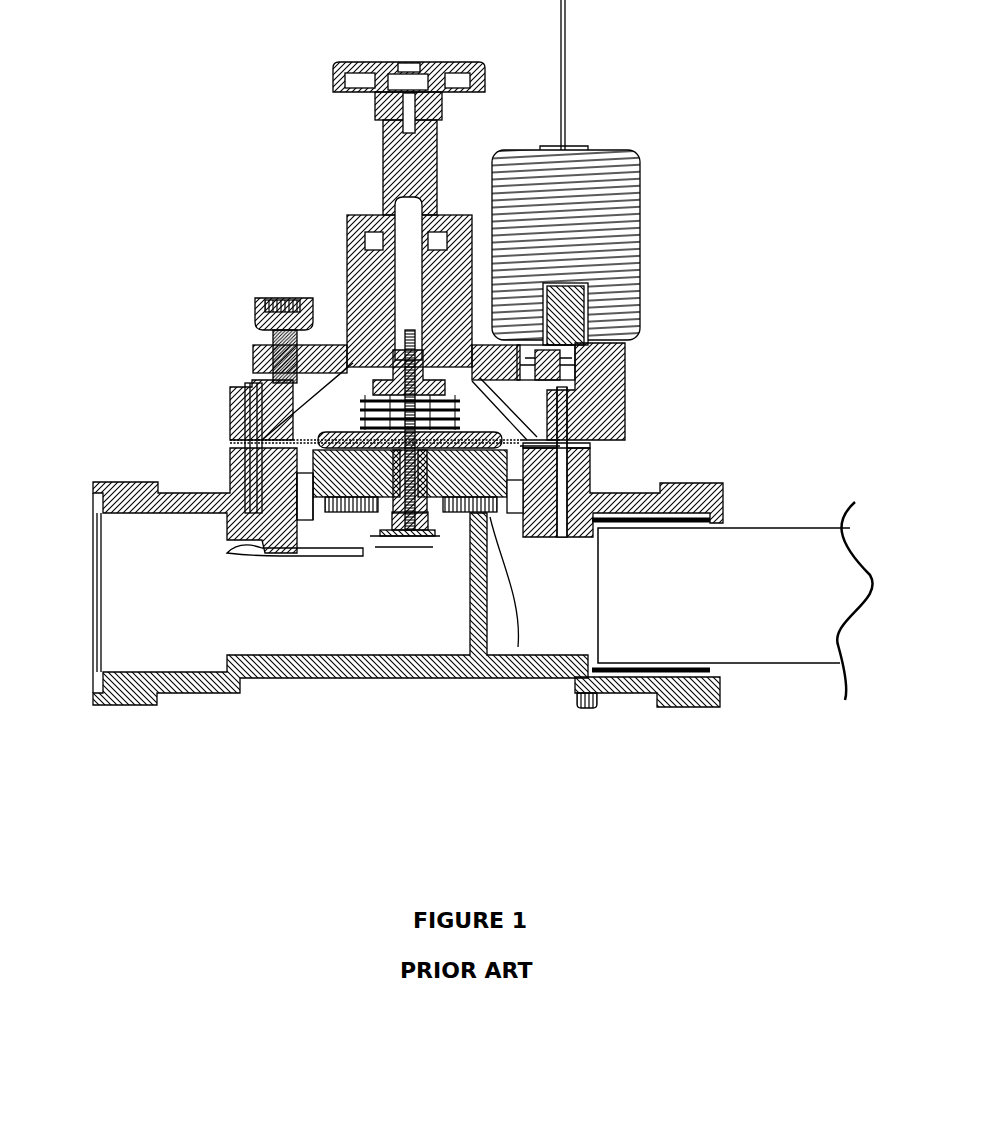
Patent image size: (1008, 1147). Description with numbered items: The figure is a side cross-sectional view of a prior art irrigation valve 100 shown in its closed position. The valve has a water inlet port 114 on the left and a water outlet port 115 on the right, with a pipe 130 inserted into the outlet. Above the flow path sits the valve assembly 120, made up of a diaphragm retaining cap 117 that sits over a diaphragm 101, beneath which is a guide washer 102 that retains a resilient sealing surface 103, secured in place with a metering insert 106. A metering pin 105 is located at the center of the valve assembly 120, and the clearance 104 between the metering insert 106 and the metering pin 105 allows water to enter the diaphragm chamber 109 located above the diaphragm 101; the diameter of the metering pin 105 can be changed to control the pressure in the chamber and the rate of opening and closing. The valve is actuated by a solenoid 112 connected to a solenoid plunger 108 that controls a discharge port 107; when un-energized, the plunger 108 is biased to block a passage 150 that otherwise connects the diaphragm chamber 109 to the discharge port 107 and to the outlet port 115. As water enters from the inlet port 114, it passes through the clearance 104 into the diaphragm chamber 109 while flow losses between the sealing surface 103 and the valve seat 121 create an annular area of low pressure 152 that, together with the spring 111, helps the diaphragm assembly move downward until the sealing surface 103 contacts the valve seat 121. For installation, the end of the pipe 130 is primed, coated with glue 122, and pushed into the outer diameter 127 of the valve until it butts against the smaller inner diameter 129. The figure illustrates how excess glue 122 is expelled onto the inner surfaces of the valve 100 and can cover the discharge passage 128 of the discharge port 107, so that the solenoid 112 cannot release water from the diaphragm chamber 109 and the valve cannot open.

The irrigation valve 100 is at (445, 386).
The diaphragm 101 is at (232, 441).
The guide washer 102 is at (600, 465).
The sealing surface 103 is at (335, 553).
The clearance 104 is at (398, 545).
The metering pin 105 is at (447, 567).
The metering insert 106 is at (488, 560).
The discharge port 107 is at (623, 405).
The solenoid plunger 108 is at (607, 302).
The diaphragm chamber 109 is at (230, 412).
The spring 111 is at (337, 310).
The solenoid 112 is at (640, 170).
The water inlet port 114 is at (96, 543).
The water outlet port 115 is at (723, 677).
The diaphragm retaining cap 117 is at (258, 360).
The valve assembly 120 is at (298, 482).
The valve seat 121 is at (495, 516).
The glue 122 is at (715, 520).
The outer diameter 127 is at (608, 697).
The discharge passage 128 is at (580, 470).
The inner diameter 129 is at (523, 680).
The pipe 130 is at (807, 667).
The passage 150 is at (625, 360).
The annular area of low pressure 152 is at (515, 497).